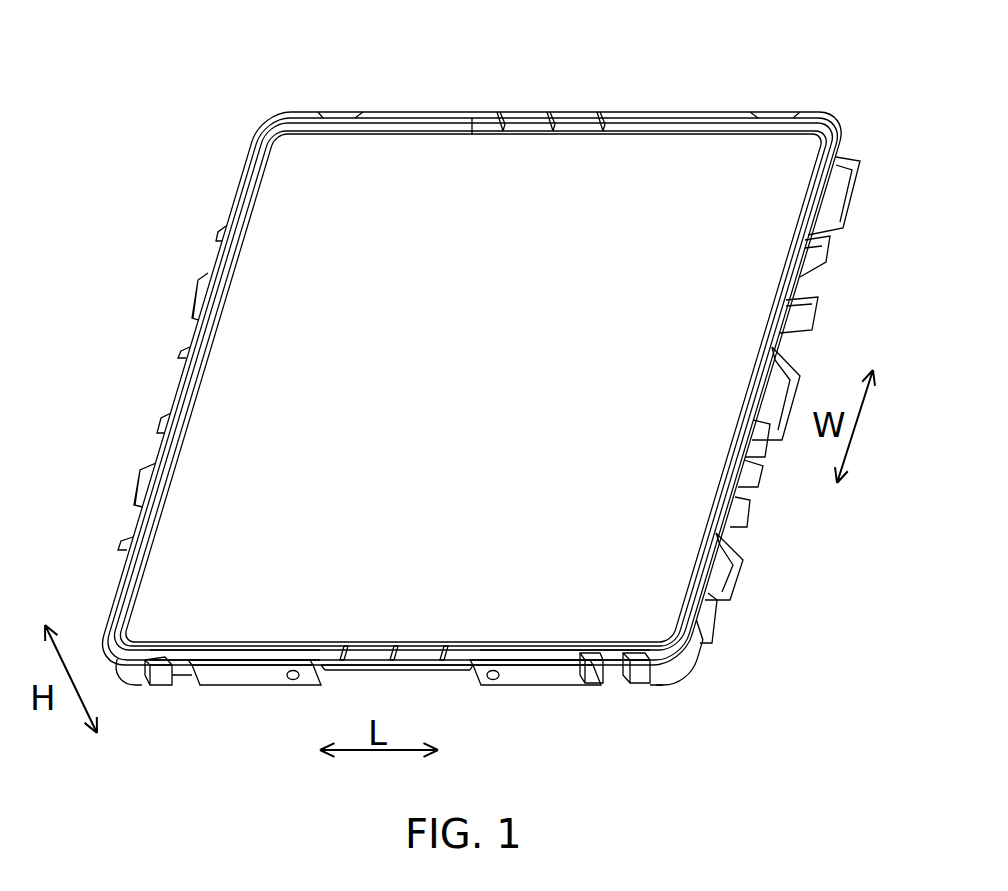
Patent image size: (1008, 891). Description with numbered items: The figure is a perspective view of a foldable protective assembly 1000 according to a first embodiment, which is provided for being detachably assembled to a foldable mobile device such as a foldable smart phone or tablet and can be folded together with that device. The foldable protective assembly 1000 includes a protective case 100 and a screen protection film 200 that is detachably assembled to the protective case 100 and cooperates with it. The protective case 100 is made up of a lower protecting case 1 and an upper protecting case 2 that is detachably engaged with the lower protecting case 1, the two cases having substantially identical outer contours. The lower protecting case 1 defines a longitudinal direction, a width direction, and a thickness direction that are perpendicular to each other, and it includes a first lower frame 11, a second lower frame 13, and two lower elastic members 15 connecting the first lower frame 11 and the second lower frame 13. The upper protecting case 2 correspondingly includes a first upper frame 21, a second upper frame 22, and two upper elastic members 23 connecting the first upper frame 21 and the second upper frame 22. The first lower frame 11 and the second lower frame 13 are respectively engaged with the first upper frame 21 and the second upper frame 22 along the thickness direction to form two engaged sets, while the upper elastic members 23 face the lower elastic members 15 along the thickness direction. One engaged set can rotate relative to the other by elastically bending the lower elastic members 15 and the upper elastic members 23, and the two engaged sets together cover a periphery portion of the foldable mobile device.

The foldable protective assembly 1000 is at (176, 40).
The protective case 100 is at (892, 38).
The lower protecting case 1 is at (492, 399).
The upper protecting case 2 is at (475, 347).
The screen protection film 200 is at (248, 268).
The first lower frame 11 is at (252, 677).
The second lower frame 13 is at (545, 679).
The lower elastic member 15 is at (420, 670).
The first upper frame 21 is at (228, 652).
The second upper frame 22 is at (556, 650).
The upper elastic member 23 is at (362, 652).